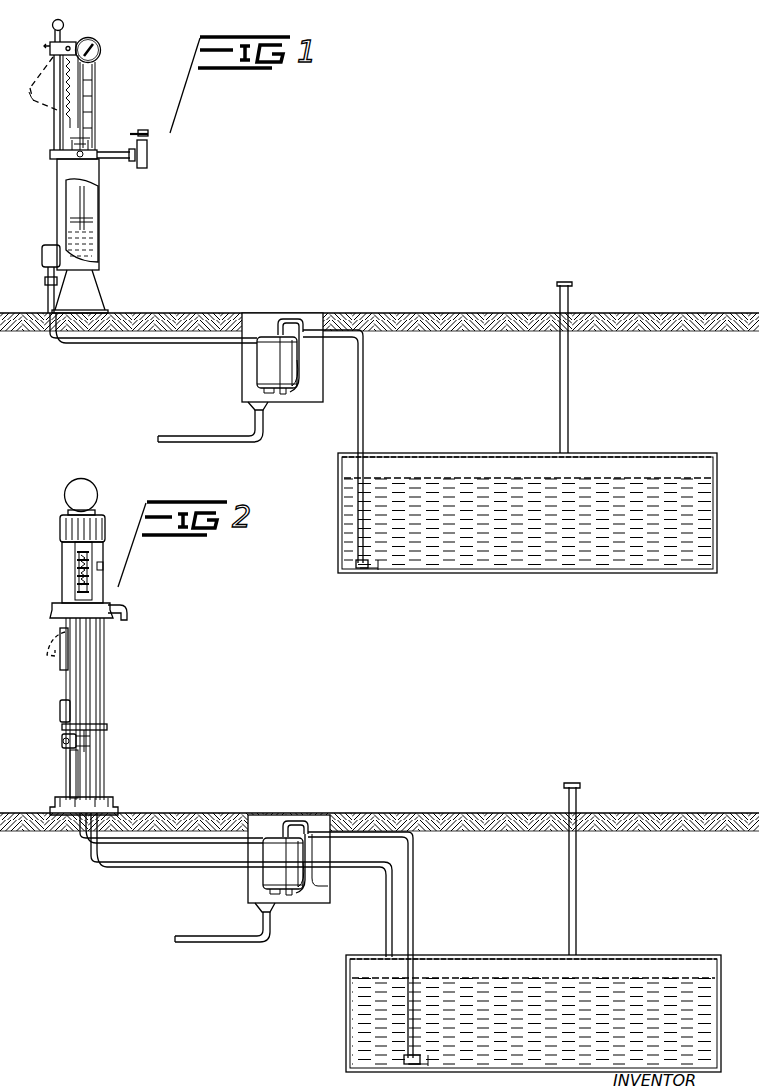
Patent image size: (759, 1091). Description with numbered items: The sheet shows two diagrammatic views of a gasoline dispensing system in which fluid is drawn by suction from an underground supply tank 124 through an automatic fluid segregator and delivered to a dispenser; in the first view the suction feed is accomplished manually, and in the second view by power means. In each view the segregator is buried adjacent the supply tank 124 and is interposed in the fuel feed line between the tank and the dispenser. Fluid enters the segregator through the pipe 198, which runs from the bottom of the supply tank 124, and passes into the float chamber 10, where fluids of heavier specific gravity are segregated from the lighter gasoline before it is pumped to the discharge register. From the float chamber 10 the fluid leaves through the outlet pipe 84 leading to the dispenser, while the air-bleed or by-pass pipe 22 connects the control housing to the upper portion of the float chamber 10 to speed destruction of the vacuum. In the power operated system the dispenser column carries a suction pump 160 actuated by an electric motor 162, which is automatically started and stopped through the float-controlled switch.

In FIG. 1, the float chamber 10 is at (268, 365).
In FIG. 2, the float chamber 10 is at (272, 870).
In FIG. 1, the air-bleed or by-pass pipe 22 is at (290, 318).
In FIG. 2, the air-bleed or by-pass pipe 22 is at (289, 820).
In FIG. 1, the outlet pipe 84 is at (175, 340).
In FIG. 2, the outlet pipe 84 is at (167, 842).
In FIG. 1, the supply tank 124 is at (527, 427).
In FIG. 2, the supply tank 124 is at (533, 927).
In FIG. 1, the pipe 198 is at (366, 392).
In FIG. 2, the pipe 198 is at (418, 887).
In FIG. 2, the suction pump 160 is at (97, 738).
In FIG. 2, the electric motor 162 is at (63, 716).